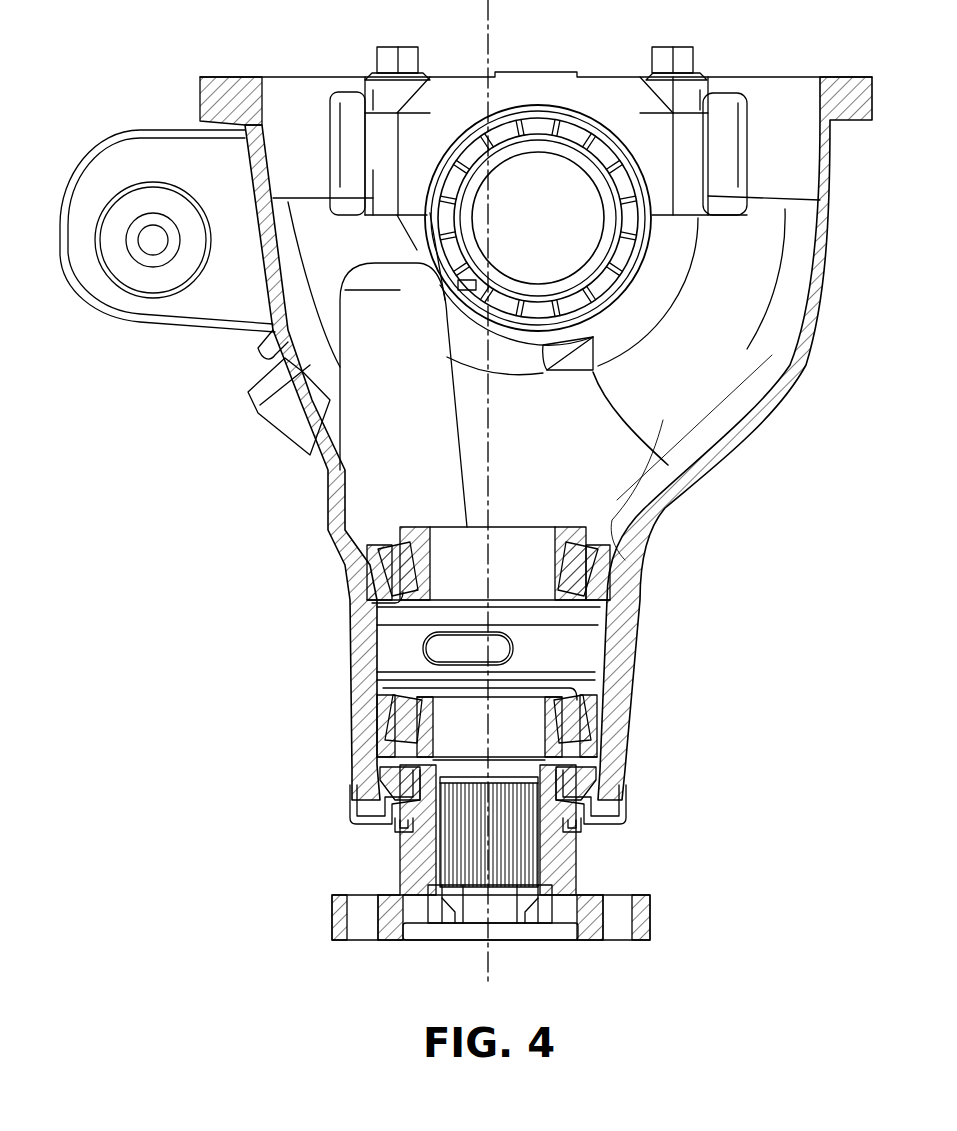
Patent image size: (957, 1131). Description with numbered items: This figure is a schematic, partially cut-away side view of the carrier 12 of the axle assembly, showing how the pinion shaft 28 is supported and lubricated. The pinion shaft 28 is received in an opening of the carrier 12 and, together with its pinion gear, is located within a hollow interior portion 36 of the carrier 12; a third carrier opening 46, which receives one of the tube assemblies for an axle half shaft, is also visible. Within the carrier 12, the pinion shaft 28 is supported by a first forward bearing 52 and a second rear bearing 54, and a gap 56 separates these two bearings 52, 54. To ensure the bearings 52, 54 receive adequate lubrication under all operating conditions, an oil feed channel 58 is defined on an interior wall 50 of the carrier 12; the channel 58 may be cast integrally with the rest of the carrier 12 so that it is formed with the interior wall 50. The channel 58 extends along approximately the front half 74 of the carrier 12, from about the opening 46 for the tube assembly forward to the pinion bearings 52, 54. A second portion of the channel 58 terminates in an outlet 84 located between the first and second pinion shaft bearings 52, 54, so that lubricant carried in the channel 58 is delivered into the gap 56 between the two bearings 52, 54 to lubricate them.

The carrier 12 is at (340, 593).
The pinion shaft 28 is at (517, 722).
The hollow interior portion 36 is at (746, 371).
The third carrier opening 46 is at (603, 213).
The interior wall 50 is at (285, 343).
The first forward bearing 52 is at (383, 727).
The second rear bearing 54 is at (367, 568).
The gap 56 is at (553, 612).
The oil feed channel 58 is at (343, 497).
The front half 74 is at (330, 620).
The outlet 84 is at (440, 645).